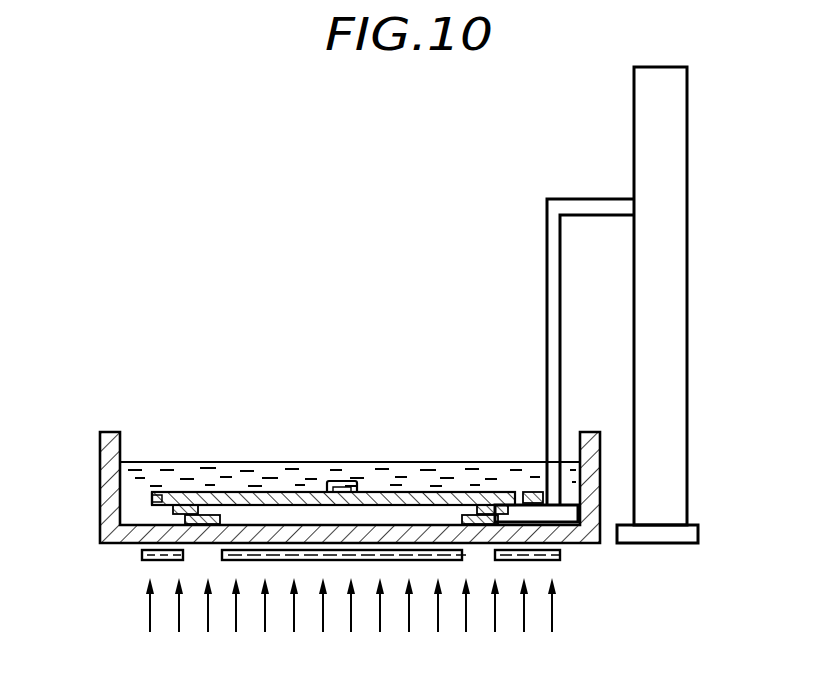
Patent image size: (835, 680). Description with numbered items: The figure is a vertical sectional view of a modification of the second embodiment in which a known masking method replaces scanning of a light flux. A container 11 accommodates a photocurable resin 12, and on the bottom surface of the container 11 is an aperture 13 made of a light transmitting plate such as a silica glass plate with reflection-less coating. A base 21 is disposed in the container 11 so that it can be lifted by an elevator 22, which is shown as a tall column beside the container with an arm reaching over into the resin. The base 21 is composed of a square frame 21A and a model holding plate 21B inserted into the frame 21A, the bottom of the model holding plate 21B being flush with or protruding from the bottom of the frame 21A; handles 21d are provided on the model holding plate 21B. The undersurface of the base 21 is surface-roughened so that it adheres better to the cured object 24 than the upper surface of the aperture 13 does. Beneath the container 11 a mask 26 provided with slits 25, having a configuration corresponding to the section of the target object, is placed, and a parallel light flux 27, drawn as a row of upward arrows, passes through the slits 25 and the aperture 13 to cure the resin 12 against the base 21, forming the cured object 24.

The container 11 is at (100, 461).
The photocurable resin 12 is at (131, 478).
The aperture 13 is at (387, 535).
The base 21 is at (289, 492).
The frame 21A is at (156, 506).
The model holding plate 21B is at (440, 492).
The handles 21d is at (356, 478).
The elevator 22 is at (690, 243).
The cured object 24 is at (207, 514).
The slits 25 is at (197, 553).
The mask 26 is at (562, 554).
The parallel light flux 27 is at (553, 618).